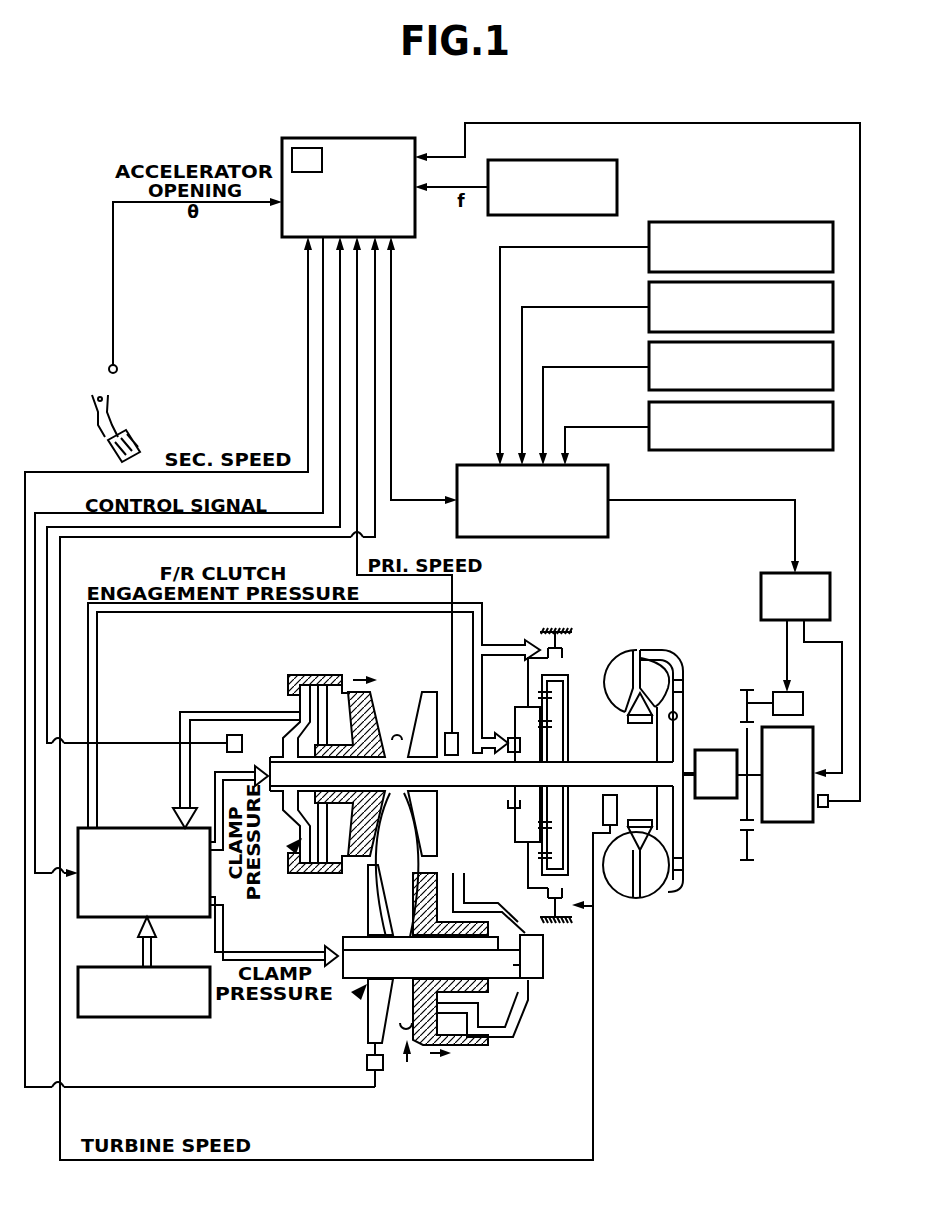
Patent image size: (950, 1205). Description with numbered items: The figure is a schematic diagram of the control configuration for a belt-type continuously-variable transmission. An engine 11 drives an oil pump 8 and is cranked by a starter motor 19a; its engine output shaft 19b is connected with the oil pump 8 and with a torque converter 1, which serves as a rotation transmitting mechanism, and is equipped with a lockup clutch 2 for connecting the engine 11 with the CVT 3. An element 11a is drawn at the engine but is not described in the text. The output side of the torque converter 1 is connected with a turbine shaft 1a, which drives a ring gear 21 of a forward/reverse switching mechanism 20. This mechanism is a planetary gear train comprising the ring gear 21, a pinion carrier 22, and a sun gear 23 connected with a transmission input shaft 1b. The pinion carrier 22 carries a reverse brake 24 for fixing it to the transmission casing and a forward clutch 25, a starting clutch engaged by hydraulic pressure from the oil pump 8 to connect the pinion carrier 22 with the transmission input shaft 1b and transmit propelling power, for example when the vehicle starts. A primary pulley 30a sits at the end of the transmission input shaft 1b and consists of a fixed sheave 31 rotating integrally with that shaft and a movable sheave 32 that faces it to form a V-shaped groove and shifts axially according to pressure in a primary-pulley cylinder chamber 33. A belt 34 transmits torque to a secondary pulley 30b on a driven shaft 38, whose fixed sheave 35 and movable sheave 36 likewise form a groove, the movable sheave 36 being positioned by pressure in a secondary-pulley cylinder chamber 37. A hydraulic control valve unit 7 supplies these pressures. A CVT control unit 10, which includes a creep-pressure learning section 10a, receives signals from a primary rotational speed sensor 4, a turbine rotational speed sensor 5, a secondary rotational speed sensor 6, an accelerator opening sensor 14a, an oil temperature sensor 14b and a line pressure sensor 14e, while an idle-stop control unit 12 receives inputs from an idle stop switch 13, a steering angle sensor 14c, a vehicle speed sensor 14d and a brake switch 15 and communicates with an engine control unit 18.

The torque converter 1 is at (652, 650).
The turbine shaft 1a is at (600, 790).
The transmission input shaft 1b is at (477, 790).
The lockup clutch 2 is at (668, 886).
The CVT 3 is at (407, 1062).
The primary rotational speed sensor 4 is at (452, 733).
The turbine rotational speed sensor 5 is at (612, 795).
The secondary rotational speed sensor 6 is at (380, 1072).
The hydraulic control valve unit 7 is at (140, 828).
The oil pump 8 is at (715, 750).
The CVT control unit 10 is at (367, 138).
The creep-pressure learning section 10a is at (308, 148).
The engine 11 is at (786, 822).
The engine output sensor 11a is at (823, 807).
The idle-stop control unit 12 is at (608, 518).
The idle stop switch 13 is at (649, 322).
The accelerator opening sensor 14a is at (109, 369).
The oil temperature sensor 14b is at (617, 187).
The steering angle sensor 14c is at (649, 262).
The vehicle speed sensor 14d is at (649, 380).
The line pressure sensor 14e is at (234, 735).
The brake switch 15 is at (649, 440).
The engine control unit 18 is at (761, 596).
The starter motor 19a is at (778, 692).
The engine output shaft 19b is at (692, 780).
The forward/reverse switching mechanism 20 is at (594, 907).
The ring gear 21 is at (565, 676).
The pinion carrier 22 is at (528, 703).
The sun gear 23 is at (545, 725).
The reverse brake 24 is at (563, 650).
The forward clutch 25 is at (513, 810).
The primary pulley 30a is at (294, 850).
The secondary pulley 30b is at (355, 998).
The fixed sheave 31 is at (430, 692).
The movable sheave 32 is at (372, 720).
The primary-pulley cylinder chamber 33 is at (340, 717).
The belt 34 is at (408, 852).
The fixed sheave 35 is at (370, 910).
The movable sheave 36 is at (478, 1045).
The secondary-pulley cylinder chamber 37 is at (500, 1005).
The driven shaft 38 is at (535, 952).